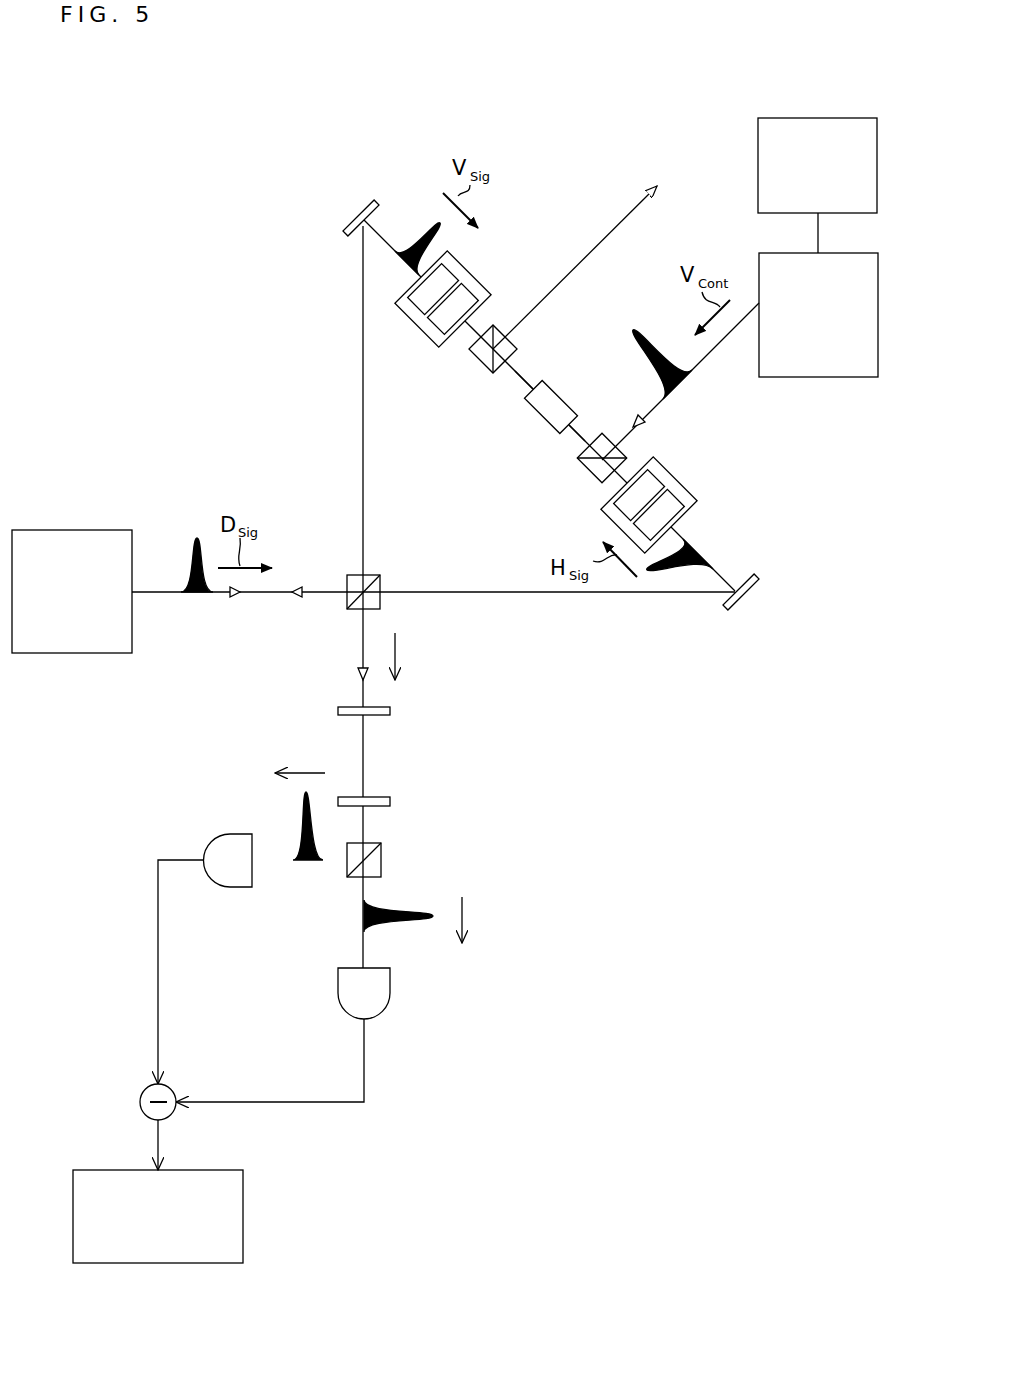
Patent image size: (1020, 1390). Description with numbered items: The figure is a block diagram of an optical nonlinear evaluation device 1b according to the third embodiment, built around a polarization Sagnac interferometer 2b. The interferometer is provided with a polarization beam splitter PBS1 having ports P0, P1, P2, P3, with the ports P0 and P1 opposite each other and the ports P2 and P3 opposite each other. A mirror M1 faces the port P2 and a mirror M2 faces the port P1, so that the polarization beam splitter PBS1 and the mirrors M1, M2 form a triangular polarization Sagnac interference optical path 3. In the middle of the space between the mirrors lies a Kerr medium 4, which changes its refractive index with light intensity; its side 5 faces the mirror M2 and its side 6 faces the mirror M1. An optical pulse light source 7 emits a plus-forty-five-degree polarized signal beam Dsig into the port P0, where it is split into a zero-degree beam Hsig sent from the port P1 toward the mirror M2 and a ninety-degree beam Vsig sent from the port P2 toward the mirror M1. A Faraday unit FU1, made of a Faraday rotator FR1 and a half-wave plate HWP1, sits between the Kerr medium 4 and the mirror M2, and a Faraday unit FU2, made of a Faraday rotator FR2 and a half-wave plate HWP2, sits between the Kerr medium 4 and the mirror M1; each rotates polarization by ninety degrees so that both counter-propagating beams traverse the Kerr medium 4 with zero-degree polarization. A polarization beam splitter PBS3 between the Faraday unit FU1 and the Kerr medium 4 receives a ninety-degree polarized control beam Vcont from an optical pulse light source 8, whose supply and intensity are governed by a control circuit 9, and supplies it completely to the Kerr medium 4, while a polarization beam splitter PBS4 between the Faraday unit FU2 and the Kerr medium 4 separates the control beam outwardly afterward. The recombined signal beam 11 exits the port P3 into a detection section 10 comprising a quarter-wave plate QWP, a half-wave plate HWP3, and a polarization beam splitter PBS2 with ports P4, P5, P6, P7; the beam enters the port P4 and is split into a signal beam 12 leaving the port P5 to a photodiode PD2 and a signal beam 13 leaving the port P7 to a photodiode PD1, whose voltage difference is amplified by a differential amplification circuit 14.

The optical nonlinear evaluation device 1b is at (103, 112).
The polarization Sagnac interferometer 2b is at (467, 137).
The polarization Sagnac interference optical path 3 is at (388, 243).
The Kerr medium 4 is at (562, 381).
The side 5 is at (580, 425).
The side 6 is at (531, 383).
The optical pulse light source 7 is at (72, 530).
The optical pulse light source 8 is at (850, 253).
The control circuit 9 is at (850, 117).
The detection section 10 is at (520, 775).
The signal beam 11 is at (396, 652).
The signal beam 12 is at (464, 918).
The signal beam 13 is at (303, 772).
The differential amplification circuit 14 is at (246, 1217).
The mirror M1 is at (347, 223).
The mirror M2 is at (737, 607).
The Faraday unit FU1 is at (600, 508).
The Faraday unit FU2 is at (418, 340).
The Faraday rotator FR1 is at (680, 492).
The Faraday rotator FR2 is at (447, 268).
The half-wave plate HWP1 is at (662, 468).
The half-wave plate HWP2 is at (474, 284).
The half-wave plate HWP3 is at (392, 800).
The quarter-wave plate QWP is at (392, 711).
The polarization beam splitter PBS1 is at (383, 605).
The polarization beam splitter PBS2 is at (384, 861).
The polarization beam splitter PBS3 is at (580, 466).
The polarization beam splitter PBS4 is at (486, 372).
The photodiode PD1 is at (230, 834).
The photodiode PD2 is at (392, 978).
The port P0 is at (347, 578).
The port P1 is at (380, 580).
The port P2 is at (358, 575).
The port P3 is at (352, 608).
The port P4 is at (380, 843).
The port P5 is at (374, 878).
The port P6 is at (382, 857).
The port P7 is at (347, 871).